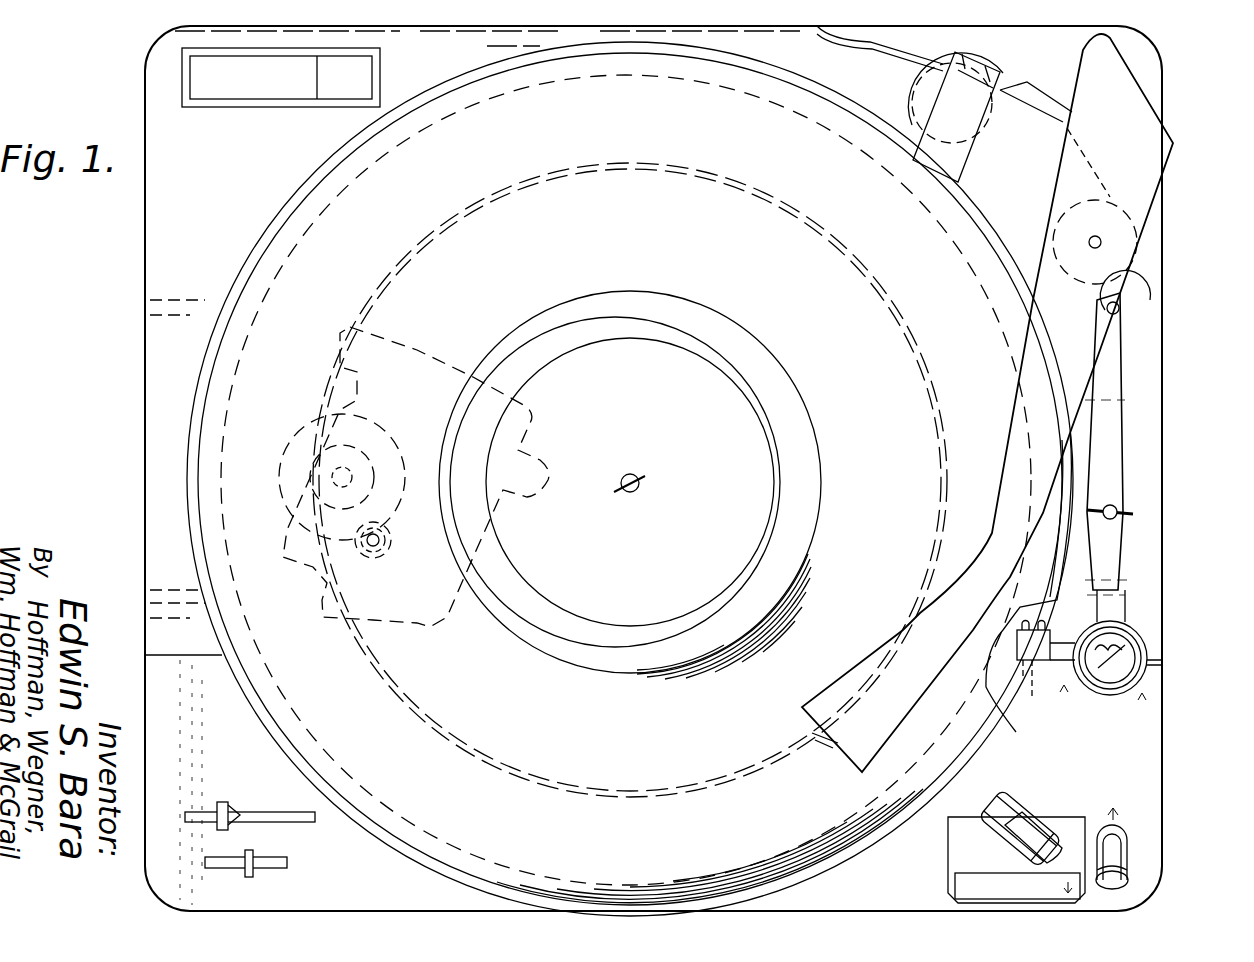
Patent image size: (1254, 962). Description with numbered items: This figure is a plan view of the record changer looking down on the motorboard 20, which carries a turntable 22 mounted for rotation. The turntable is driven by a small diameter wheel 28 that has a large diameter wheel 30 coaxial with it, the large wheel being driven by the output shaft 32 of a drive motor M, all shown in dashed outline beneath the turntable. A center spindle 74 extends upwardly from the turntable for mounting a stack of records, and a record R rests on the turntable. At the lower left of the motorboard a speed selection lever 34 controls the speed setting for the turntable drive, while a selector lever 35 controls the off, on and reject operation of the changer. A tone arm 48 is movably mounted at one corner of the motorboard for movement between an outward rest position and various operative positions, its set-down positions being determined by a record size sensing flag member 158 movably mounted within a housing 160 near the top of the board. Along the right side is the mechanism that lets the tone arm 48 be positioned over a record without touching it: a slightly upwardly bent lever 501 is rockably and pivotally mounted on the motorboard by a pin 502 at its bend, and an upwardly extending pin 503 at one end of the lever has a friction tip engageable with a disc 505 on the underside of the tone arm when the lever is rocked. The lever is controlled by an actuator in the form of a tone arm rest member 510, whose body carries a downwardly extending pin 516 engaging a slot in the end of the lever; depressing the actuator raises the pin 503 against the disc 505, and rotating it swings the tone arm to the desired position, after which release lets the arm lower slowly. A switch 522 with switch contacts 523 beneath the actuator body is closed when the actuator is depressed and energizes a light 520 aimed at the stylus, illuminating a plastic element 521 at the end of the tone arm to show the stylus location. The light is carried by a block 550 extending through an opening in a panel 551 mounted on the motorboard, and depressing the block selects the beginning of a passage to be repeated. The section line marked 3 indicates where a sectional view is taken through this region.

The motorboard 20 is at (157, 243).
The record R is at (279, 206).
The turntable 22 is at (543, 173).
The center spindle 74 is at (636, 474).
The drive motor M is at (418, 353).
The small diameter wheel 28 is at (337, 480).
The large diameter wheel 30 is at (373, 437).
The output shaft 32 is at (380, 556).
The tone arm 48 is at (1035, 386).
The record size sensing flag member 158 is at (897, 55).
The housing 160 is at (997, 177).
The section line 3- 3 is at (1108, 64).
The disc 505 is at (1133, 297).
The upwardly extending pin 503 is at (1120, 312).
The lever 501 is at (1110, 470).
The pin 502 is at (1113, 520).
The downwardly extending pin 516 is at (1130, 624).
The tone arm rest member 510 is at (1128, 668).
The switch 522 is at (1020, 647).
The switch contacts 523 is at (1040, 708).
The plastic element 521 is at (832, 745).
The panel 551 is at (1140, 760).
The light 520 is at (1007, 805).
The block 550 is at (955, 862).
The speed selection lever 34 is at (232, 812).
The selector lever 35 is at (253, 866).